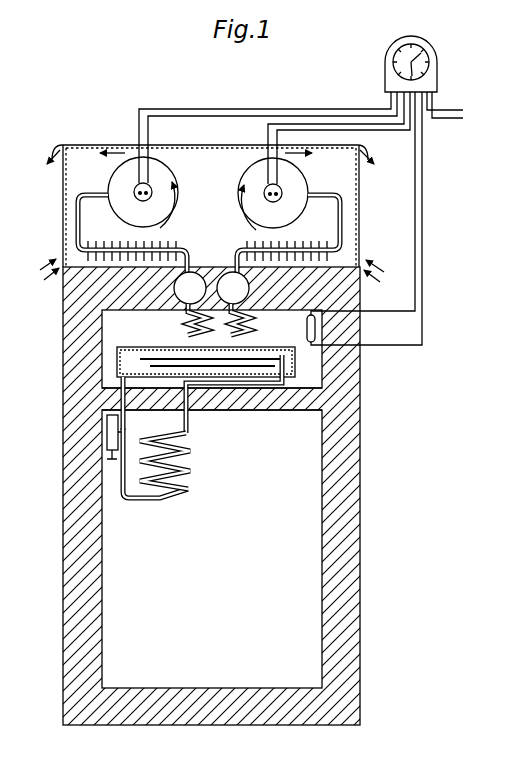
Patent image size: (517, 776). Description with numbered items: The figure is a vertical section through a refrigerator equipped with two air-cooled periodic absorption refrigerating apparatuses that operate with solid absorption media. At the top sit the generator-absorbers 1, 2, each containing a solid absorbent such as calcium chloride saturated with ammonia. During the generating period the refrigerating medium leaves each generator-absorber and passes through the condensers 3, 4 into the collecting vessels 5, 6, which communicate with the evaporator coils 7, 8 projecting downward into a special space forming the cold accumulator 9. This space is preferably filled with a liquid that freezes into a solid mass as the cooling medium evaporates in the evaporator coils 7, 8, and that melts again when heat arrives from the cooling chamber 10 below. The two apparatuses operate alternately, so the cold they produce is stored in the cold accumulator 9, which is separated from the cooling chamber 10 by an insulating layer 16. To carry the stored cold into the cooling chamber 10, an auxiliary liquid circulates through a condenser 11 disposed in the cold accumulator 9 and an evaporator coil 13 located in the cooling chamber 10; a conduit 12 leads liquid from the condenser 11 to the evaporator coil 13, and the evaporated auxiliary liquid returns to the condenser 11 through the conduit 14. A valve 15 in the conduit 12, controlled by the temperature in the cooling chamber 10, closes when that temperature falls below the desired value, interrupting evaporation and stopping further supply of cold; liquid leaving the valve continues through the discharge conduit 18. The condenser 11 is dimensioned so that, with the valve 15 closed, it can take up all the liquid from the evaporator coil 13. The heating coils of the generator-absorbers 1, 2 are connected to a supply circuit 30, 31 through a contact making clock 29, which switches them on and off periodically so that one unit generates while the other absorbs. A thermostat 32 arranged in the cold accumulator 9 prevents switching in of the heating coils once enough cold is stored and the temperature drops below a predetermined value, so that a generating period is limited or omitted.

The generator-absorber 1 is at (163, 181).
The generator-absorber 2 is at (251, 173).
The condenser 3 is at (166, 253).
The condenser 4 is at (238, 253).
The collecting vessel 5 is at (190, 271).
The collecting vessel 6 is at (229, 277).
The evaporator coil 7 is at (184, 322).
The evaporator coil 8 is at (251, 323).
The cold accumulator 9 is at (104, 329).
The cooling chamber 10 is at (108, 562).
The condenser 11 is at (118, 363).
The conduit 12 is at (118, 398).
The evaporator coil 13 is at (176, 500).
The conduit 14 is at (191, 412).
The valve 15 is at (110, 426).
The insulating layer 16 is at (275, 407).
The discharge conduit 18 is at (124, 469).
The contact making clock 29 is at (437, 56).
The supply circuit 30 is at (450, 100).
The supply circuit 31 is at (450, 115).
The thermostat 32 is at (307, 329).